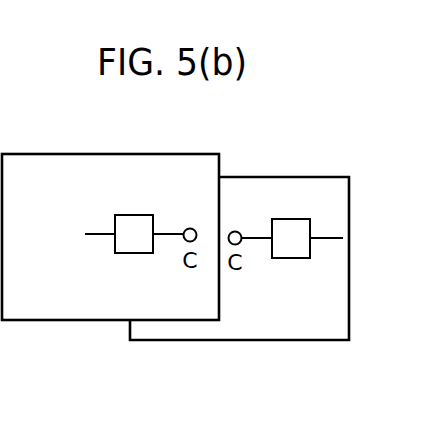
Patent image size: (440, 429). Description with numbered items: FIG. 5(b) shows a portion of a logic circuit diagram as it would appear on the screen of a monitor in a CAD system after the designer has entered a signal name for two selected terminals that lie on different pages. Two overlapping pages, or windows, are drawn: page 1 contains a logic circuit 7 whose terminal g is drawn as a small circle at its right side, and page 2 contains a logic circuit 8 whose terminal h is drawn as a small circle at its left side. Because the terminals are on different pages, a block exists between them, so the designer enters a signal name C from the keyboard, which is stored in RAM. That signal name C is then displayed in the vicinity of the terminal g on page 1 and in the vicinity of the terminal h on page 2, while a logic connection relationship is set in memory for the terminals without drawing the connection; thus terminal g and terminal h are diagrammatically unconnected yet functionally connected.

The page 1 is at (115, 154).
The page 2 is at (296, 176).
The logic circuit 7 is at (135, 253).
The logic circuit 8 is at (292, 258).
The terminal g is at (190, 222).
The terminal h is at (235, 225).